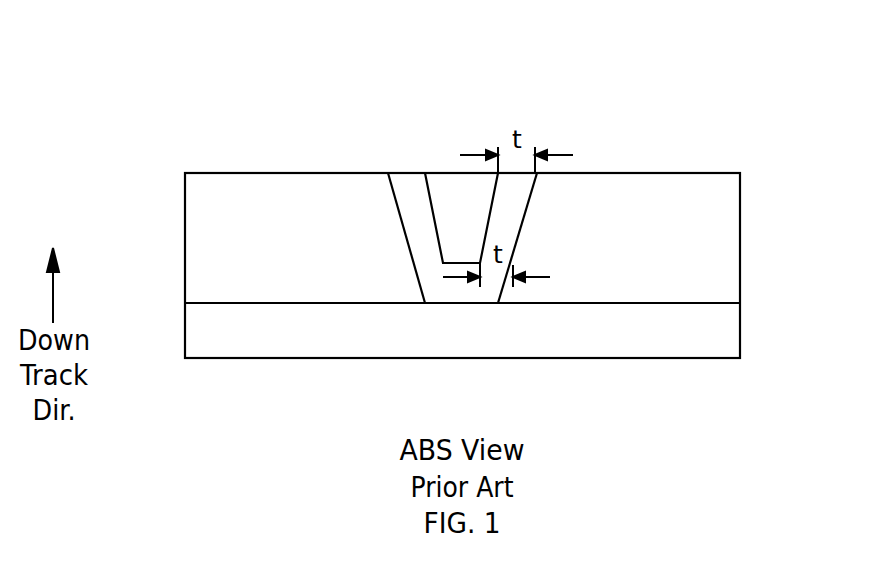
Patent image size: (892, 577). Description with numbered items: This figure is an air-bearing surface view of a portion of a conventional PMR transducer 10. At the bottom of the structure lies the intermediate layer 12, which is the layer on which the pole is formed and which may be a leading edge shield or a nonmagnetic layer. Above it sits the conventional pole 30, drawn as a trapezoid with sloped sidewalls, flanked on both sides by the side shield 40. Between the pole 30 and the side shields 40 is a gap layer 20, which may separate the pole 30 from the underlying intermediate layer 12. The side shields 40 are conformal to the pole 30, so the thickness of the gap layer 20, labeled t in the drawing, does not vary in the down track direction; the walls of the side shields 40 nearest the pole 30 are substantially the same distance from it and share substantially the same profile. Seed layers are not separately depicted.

The conventional PMR transducer 10 is at (478, 73).
The intermediate layer 12 is at (185, 340).
The gap layer 20 is at (406, 173).
The pole 30 is at (480, 173).
The side shield 40 is at (185, 248).